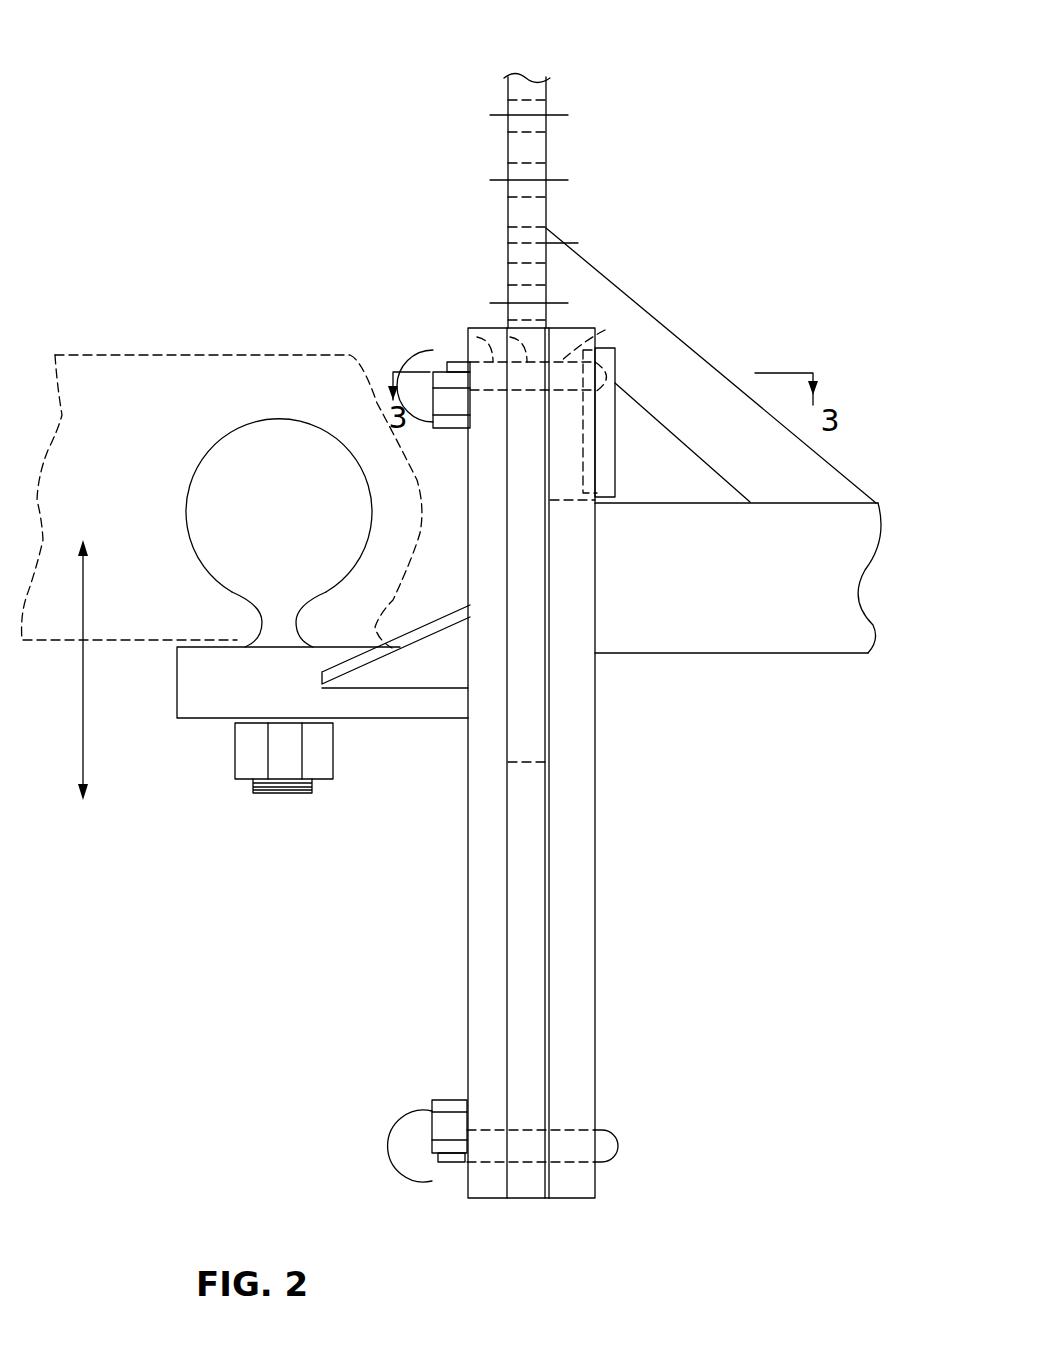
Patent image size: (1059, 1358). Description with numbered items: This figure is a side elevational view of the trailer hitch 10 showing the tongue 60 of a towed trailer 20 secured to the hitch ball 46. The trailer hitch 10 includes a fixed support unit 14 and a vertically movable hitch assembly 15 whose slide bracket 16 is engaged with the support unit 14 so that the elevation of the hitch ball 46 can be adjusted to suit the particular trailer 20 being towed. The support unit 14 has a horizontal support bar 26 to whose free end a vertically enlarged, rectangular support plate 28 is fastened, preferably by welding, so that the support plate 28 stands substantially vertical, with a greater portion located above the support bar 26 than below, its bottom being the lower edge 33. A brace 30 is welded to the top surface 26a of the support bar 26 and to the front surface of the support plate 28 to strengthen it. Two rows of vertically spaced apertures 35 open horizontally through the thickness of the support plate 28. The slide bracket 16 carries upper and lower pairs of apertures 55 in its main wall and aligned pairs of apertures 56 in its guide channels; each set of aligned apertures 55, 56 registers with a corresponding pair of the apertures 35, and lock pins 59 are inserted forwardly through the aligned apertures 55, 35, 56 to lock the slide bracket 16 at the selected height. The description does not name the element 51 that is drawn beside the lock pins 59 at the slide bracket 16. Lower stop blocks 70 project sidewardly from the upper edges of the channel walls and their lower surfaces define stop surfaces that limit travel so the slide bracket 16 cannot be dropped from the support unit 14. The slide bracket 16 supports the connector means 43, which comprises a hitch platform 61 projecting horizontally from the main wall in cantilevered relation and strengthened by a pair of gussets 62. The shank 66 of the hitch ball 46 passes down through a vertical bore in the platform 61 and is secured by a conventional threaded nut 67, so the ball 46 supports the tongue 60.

The trailer hitch 10 is at (296, 968).
The support unit 14 is at (720, 656).
The hitch assembly 15 is at (638, 1191).
The slide bracket 16 is at (570, 1204).
The trailer 20 is at (197, 340).
The support bar 26 is at (818, 637).
The top surface of support bar 26a is at (750, 502).
The support plate 28 is at (535, 88).
The brace 30 is at (672, 345).
The lower edge of support plate 33 is at (527, 762).
The apertures 35 is at (520, 113).
The connector means 43 is at (172, 727).
The hitch ball 46 is at (284, 437).
The clamp bolt nut 51 is at (445, 424).
The apertures of main wall 55 is at (470, 345).
The apertures of guide channels 56 is at (605, 330).
The lock pins 59 is at (462, 364).
The tongue 60 is at (233, 380).
The hitch platform 61 is at (203, 705).
The gussets 62 is at (401, 668).
The shank 66 is at (305, 787).
The threaded nut 67 is at (256, 755).
The lower stop blocks 70 is at (607, 427).